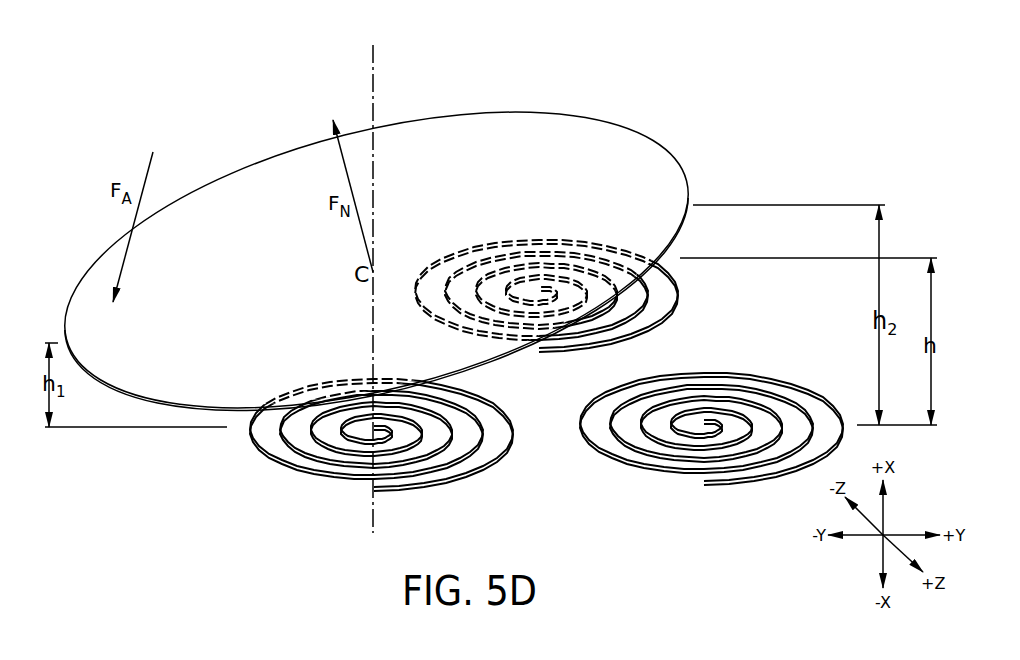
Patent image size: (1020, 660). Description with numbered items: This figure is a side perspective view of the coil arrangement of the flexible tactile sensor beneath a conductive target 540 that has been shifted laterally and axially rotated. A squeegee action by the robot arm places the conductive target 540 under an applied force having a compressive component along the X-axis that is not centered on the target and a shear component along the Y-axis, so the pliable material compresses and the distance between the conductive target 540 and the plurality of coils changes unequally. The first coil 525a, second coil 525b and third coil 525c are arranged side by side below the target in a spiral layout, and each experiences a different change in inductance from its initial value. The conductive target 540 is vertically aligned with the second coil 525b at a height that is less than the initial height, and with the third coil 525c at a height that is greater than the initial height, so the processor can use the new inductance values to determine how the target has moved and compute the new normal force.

The conductive target 540 is at (377, 260).
The first coil 525a is at (604, 288).
The second coil 525b is at (417, 460).
The third coil 525c is at (711, 386).